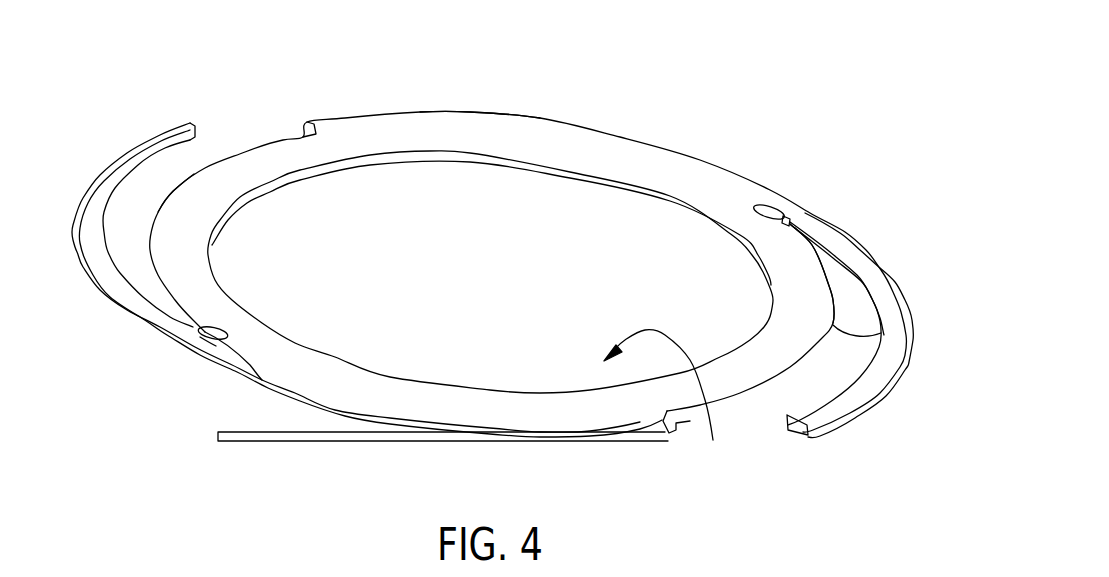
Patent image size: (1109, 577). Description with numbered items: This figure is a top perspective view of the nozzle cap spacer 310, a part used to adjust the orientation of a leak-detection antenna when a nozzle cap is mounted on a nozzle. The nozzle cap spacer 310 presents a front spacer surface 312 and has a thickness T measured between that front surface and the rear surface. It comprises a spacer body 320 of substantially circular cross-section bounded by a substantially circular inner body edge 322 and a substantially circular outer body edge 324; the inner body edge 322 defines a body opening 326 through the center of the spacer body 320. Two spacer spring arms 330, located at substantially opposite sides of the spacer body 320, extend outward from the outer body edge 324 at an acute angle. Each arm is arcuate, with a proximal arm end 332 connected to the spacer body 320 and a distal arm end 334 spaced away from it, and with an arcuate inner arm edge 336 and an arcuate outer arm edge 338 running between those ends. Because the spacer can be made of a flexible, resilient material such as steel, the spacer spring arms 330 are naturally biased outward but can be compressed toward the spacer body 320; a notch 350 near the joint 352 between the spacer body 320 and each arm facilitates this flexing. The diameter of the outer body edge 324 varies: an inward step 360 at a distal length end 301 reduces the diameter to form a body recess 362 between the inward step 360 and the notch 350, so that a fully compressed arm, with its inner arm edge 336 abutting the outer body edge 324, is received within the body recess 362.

The nozzle cap spacer 310 is at (853, 91).
The front spacer surface 312 is at (705, 185).
The spacer body 320 is at (615, 150).
The inner body edge 322 is at (565, 176).
The outer body edge 324 is at (540, 116).
The distal length end 301 is at (302, 134).
The body opening 326 is at (666, 402).
The spacer spring arms 330 is at (96, 194).
The proximal arm end 332 is at (184, 334).
The distal arm end 334 is at (186, 122).
The inner arm edge 336 is at (830, 253).
The outer arm edge 338 is at (870, 404).
The notch 350 is at (210, 330).
The joint 352 is at (208, 343).
The inward step 360 is at (665, 430).
The body recess 362 is at (172, 193).
The thickness T is at (226, 436).